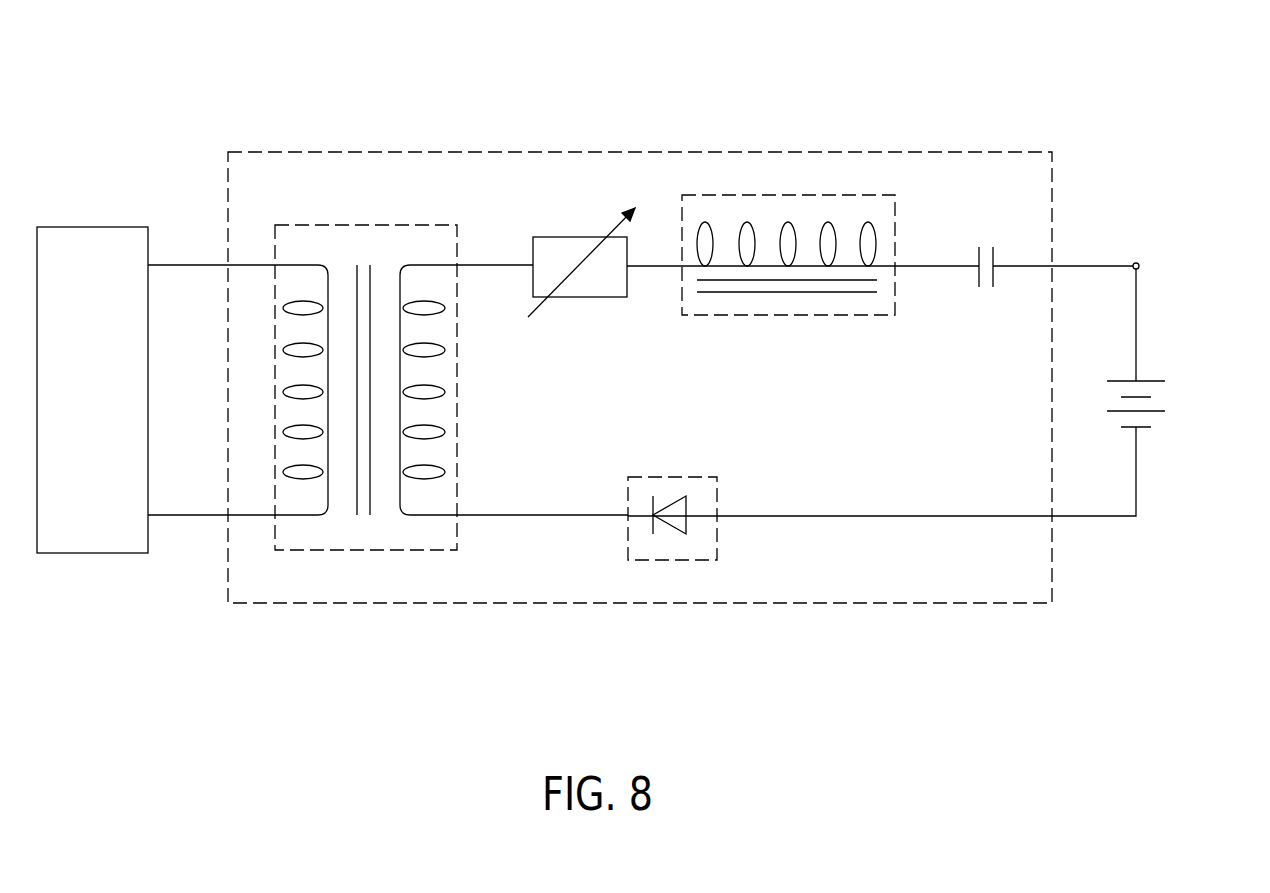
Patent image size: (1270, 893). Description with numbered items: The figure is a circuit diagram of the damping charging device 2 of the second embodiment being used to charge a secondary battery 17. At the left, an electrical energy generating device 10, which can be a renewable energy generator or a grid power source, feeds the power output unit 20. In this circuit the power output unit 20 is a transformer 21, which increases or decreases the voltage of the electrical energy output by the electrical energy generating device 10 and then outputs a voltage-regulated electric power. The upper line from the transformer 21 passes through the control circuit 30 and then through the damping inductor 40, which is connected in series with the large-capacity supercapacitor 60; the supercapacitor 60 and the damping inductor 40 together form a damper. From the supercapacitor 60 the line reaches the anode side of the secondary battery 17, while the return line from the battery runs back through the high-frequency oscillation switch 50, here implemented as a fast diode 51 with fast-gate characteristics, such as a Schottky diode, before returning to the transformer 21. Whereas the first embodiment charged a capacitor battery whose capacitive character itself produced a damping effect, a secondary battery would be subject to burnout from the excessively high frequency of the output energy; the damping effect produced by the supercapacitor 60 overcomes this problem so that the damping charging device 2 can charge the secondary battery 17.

The damping charging device 2 is at (517, 151).
The electrical energy generating device 10 is at (88, 537).
The secondary battery 17 is at (1159, 400).
The power output unit 20 is at (451, 398).
The transformer 21 is at (358, 258).
The control circuit 30 is at (553, 250).
The damping inductor 40 is at (773, 194).
The high-frequency oscillation switch 50 is at (672, 554).
The fast diode 51 is at (662, 500).
The supercapacitor 60 is at (985, 245).